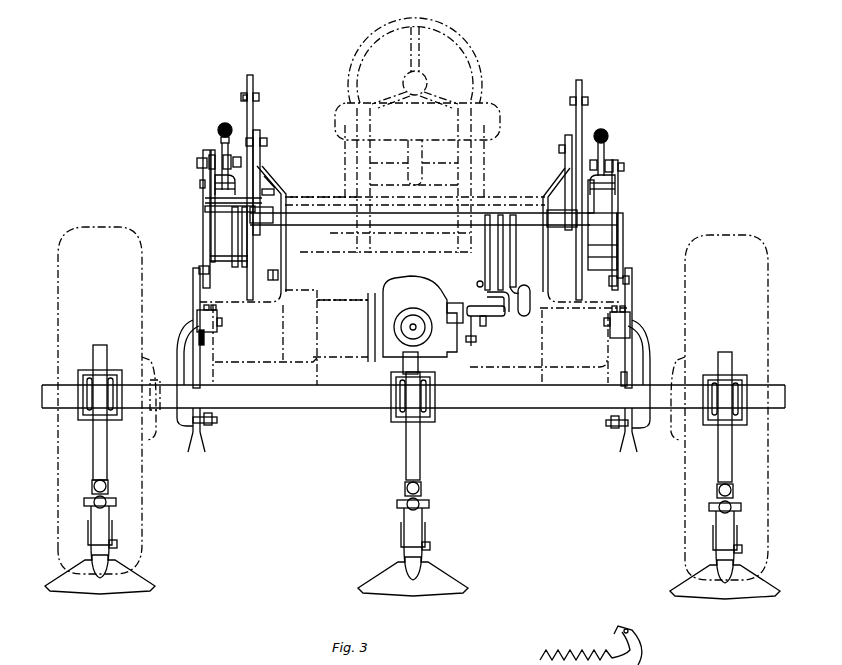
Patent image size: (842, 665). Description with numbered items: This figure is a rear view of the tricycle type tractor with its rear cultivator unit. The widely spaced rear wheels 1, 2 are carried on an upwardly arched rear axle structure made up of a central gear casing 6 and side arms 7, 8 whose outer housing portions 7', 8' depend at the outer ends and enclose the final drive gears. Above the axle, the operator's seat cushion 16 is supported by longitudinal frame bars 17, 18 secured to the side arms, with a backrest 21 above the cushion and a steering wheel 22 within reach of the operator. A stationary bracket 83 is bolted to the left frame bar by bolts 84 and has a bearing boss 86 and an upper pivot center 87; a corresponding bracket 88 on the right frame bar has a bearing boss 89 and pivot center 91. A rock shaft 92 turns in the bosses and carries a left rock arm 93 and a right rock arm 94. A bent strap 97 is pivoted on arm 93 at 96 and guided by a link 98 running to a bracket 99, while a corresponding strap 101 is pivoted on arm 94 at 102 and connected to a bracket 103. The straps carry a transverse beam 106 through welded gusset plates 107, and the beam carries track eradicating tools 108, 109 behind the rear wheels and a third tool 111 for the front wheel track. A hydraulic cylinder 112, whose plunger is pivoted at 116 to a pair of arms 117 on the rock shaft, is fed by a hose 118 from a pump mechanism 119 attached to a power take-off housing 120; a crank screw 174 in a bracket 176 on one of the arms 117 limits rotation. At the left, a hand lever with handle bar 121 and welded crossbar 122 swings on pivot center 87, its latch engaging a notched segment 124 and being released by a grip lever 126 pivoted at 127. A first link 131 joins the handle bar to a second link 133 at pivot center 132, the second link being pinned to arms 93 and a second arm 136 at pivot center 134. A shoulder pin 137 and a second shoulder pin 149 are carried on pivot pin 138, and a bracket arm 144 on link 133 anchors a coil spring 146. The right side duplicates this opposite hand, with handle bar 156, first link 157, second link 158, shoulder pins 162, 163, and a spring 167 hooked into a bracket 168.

The rear wheel 1 is at (140, 512).
The rear wheel 2 is at (686, 539).
The central gear casing 6 is at (383, 292).
The side arm 7 is at (265, 345).
The outer housing portion 7' is at (215, 414).
The side arm 8 is at (539, 347).
The outer housing portion 8' is at (600, 421).
The seat cushion 16 is at (496, 198).
The frame bar 17 is at (315, 290).
The frame bar 18 is at (538, 307).
The backrest 21 is at (486, 110).
The steering wheel 22 is at (468, 54).
The stationary bracket 83 is at (274, 183).
The bolts 84 is at (268, 280).
The bearing boss 86 is at (264, 224).
The pivot center 87 is at (266, 144).
The stationary bracket 88 is at (556, 182).
The bearing boss 89 is at (562, 227).
The pivot center 91 is at (559, 149).
The rock shaft 92 is at (340, 212).
The rock arm 93 is at (203, 236).
The rock arm 94 is at (624, 251).
The pivot 96 is at (199, 270).
The bent strap 97 is at (193, 288).
The link 98 is at (180, 347).
The bracket 99 is at (215, 334).
The strap 101 is at (633, 306).
The pivot 102 is at (628, 284).
The bracket 103 is at (612, 338).
The transverse beam 106 is at (510, 402).
The gusset plates 107 is at (205, 373).
The track eradicating tool 108 is at (136, 588).
The track eradicating tool 109 is at (748, 591).
The track eradicating tool 111 is at (436, 590).
The hydraulic cylinder 112 is at (487, 294).
The pivotal connection 116 is at (478, 283).
The arms 117 is at (486, 261).
The hose 118 is at (485, 320).
The pump mechanism 119 is at (471, 342).
The power take-off housing 120 is at (368, 340).
The handle bar 121 is at (253, 92).
The crossbar 122 is at (270, 172).
The notched segment 124 is at (275, 193).
The grip lever 126 is at (245, 96).
The pivot 127 is at (259, 97).
The first link 131 is at (205, 200).
The pivot center 132 is at (200, 184).
The second link 133 is at (203, 208).
The pivot center 134 is at (205, 263).
The second arm 136 is at (247, 254).
The shoulder pin 137 is at (207, 158).
The pivot pin 138 is at (197, 163).
The bracket arm 144 is at (218, 132).
The coil spring 146 is at (226, 123).
The shoulder pin 149 is at (222, 150).
The handle bar 156 is at (583, 90).
The first link 157 is at (599, 142).
The second link 158 is at (618, 211).
The shoulder pin 162 is at (621, 169).
The shoulder pin 163 is at (613, 162).
The spring 167 is at (609, 130).
The bracket 168 is at (612, 150).
The crank screw 174 is at (524, 316).
The bracket 176 is at (516, 260).